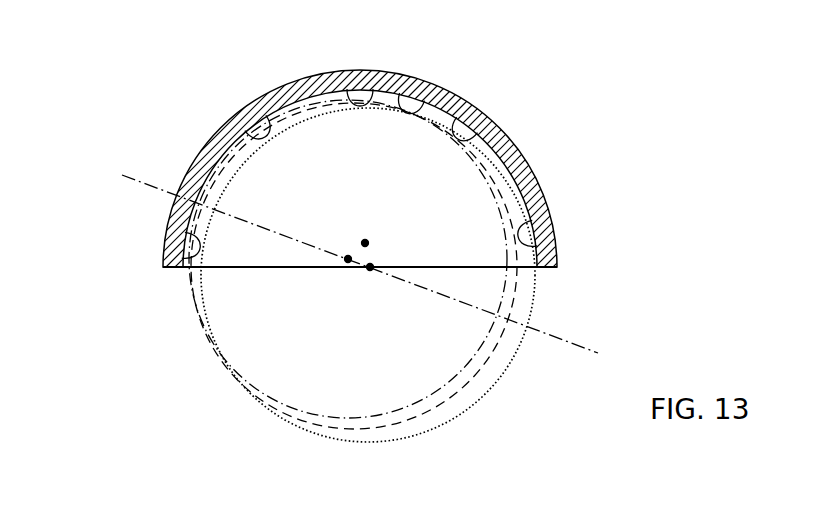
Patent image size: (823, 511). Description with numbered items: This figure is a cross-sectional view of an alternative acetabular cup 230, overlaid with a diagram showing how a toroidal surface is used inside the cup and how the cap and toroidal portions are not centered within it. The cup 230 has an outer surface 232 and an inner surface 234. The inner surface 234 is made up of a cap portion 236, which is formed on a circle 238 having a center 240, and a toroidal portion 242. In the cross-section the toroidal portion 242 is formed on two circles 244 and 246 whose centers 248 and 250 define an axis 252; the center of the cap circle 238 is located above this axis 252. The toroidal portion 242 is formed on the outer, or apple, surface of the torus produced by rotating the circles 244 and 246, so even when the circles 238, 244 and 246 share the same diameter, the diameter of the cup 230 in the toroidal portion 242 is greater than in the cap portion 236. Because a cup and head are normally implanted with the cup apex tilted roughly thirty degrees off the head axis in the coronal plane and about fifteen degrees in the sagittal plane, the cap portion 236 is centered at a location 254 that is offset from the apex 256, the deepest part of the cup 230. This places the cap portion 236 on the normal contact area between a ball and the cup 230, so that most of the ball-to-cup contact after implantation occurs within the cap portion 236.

The acetabular cup 230 is at (626, 70).
The outer surface 232 is at (297, 79).
The inner surface 234 is at (272, 110).
The cap portion 236 is at (475, 117).
The circle 238 is at (287, 418).
The center 240 is at (366, 243).
The toroidal portion 242 is at (168, 260).
The circle 244 is at (200, 345).
The circle 246 is at (535, 305).
The center 248 is at (348, 259).
The center 250 is at (370, 267).
The axis 252 is at (124, 175).
The location 254 is at (412, 90).
The apex 256 is at (368, 88).